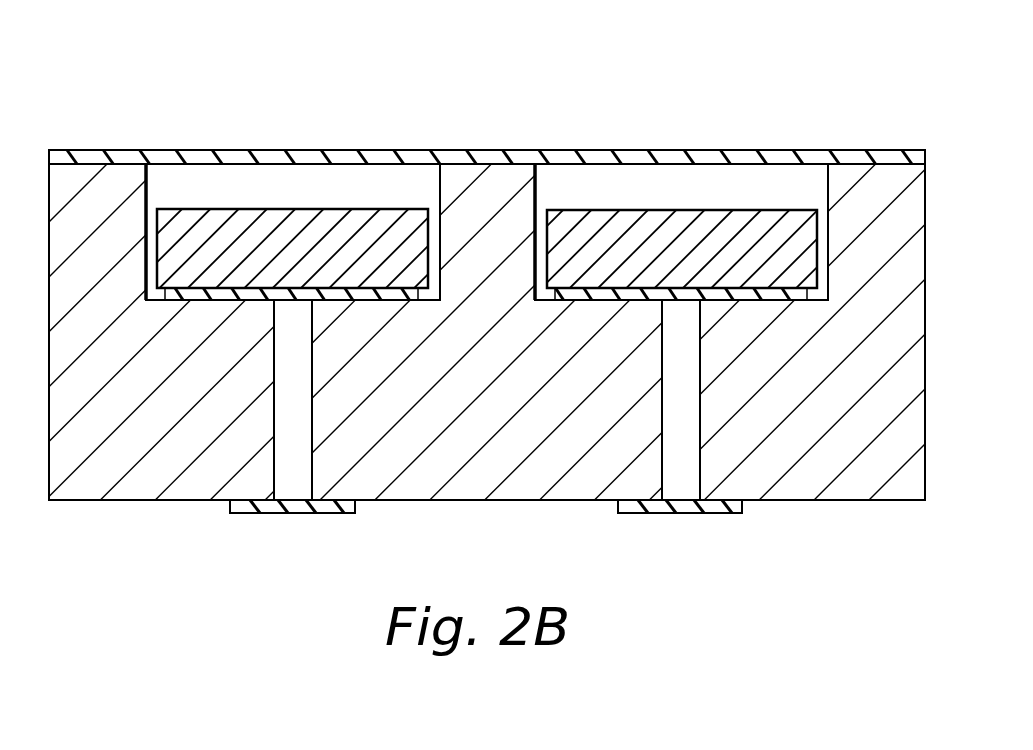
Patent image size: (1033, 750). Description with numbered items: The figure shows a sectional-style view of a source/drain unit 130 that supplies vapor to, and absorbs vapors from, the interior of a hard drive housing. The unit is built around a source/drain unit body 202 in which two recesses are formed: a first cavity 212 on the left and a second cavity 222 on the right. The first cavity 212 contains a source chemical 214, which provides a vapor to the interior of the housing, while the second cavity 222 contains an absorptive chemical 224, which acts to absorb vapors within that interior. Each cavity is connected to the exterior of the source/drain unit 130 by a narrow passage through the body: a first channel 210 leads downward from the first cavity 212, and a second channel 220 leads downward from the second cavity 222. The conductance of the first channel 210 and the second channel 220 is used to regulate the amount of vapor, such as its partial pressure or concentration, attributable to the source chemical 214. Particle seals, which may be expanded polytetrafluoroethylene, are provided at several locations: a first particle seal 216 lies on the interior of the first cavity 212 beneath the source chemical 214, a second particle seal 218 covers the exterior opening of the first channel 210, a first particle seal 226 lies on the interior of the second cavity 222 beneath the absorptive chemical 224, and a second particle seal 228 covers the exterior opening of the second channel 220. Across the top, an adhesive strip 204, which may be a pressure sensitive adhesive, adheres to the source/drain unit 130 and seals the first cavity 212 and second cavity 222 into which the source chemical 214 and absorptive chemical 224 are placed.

The source/drain unit 130 is at (780, 51).
The source/drain unit body 202 is at (476, 185).
The adhesive strip 204 is at (102, 152).
The first cavity 212 is at (222, 182).
The source chemical 214 is at (318, 228).
The first particle seal 216 is at (195, 298).
The first channel 210 is at (290, 423).
The second particle seal 218 is at (297, 515).
The second cavity 222 is at (616, 182).
The absorptive chemical 224 is at (700, 230).
The first particle seal 226 is at (772, 297).
The second channel 220 is at (685, 422).
The second particle seal 228 is at (687, 515).